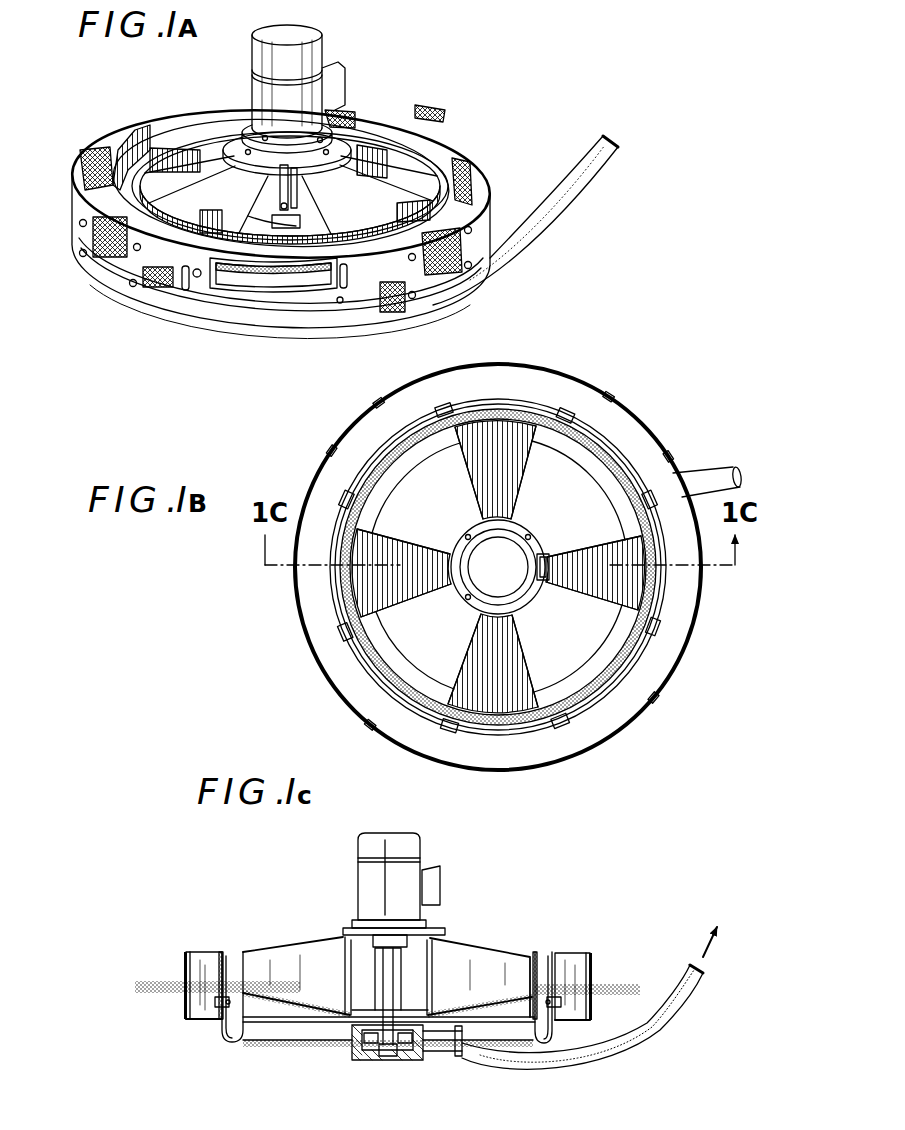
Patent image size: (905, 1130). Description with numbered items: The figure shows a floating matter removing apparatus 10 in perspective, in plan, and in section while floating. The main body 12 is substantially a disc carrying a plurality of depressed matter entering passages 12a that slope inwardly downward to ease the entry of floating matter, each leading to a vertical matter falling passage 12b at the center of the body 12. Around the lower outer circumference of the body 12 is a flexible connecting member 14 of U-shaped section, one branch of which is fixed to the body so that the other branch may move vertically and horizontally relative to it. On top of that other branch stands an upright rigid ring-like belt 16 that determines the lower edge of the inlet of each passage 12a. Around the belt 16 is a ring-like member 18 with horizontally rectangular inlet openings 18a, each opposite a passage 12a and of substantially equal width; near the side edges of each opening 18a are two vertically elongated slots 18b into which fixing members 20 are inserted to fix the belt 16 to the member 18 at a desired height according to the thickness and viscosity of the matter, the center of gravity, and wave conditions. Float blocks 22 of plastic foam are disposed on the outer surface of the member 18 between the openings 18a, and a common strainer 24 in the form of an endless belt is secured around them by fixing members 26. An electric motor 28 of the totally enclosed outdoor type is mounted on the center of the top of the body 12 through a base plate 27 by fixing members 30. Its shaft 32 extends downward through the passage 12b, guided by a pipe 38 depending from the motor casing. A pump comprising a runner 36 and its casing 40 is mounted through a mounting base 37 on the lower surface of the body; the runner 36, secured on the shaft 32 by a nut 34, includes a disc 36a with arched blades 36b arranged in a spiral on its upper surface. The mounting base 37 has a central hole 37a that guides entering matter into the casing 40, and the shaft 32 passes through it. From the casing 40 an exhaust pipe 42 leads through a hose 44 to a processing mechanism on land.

In FIG. 1A, the floating matter removing apparatus 10 is at (420, 116).
In FIG. 1B, the floating matter removing apparatus 10 is at (651, 424).
In FIG. 1C, the floating matter removing apparatus 10 is at (530, 943).
In FIG. 1A, the main body 12 is at (202, 126).
In FIG. 1B, the main body 12 is at (420, 533).
In FIG. 1C, the main body 12 is at (285, 955).
In FIG. 1B, the matter entering passage 12a is at (518, 432).
In FIG. 1C, the matter falling passage 12b is at (348, 960).
In FIG. 1B, the connecting member 14 is at (660, 582).
In FIG. 1C, the connecting member 14 is at (226, 1032).
In FIG. 1A, the ring-like belt 16 is at (143, 128).
In FIG. 1B, the ring-like belt 16 is at (468, 735).
In FIG. 1C, the ring-like belt 16 is at (220, 1014).
In FIG. 1A, the ring-like member 18 is at (478, 140).
In FIG. 1B, the ring-like member 18 is at (505, 740).
In FIG. 1C, the ring-like member 18 is at (224, 965).
In FIG. 1A, the inlet opening 18a is at (105, 150).
In FIG. 1C, the inlet opening 18a is at (212, 976).
In FIG. 1A, the vertically elongated slot 18b is at (205, 322).
In FIG. 1A, the fixing member 20 is at (186, 318).
In FIG. 1B, the fixing member 20 is at (340, 496).
In FIG. 1C, the fixing member 20 is at (220, 1003).
In FIG. 1A, the float block 22 is at (176, 118).
In FIG. 1B, the float block 22 is at (332, 452).
In FIG. 1C, the float block 22 is at (205, 952).
In FIG. 1A, the strainer 24 is at (486, 222).
In FIG. 1B, the strainer 24 is at (566, 370).
In FIG. 1C, the strainer 24 is at (187, 966).
In FIG. 1A, the fixing member 26 is at (428, 308).
In FIG. 1B, the fixing member 26 is at (366, 394).
In FIG. 1A, the base plate 27 is at (382, 116).
In FIG. 1B, the base plate 27 is at (508, 500).
In FIG. 1C, the base plate 27 is at (432, 945).
In FIG. 1A, the electric motor 28 is at (323, 32).
In FIG. 1B, the electric motor 28 is at (518, 600).
In FIG. 1C, the electric motor 28 is at (370, 862).
In FIG. 1A, the fixing member 30 is at (232, 110).
In FIG. 1B, the fixing member 30 is at (462, 536).
In FIG. 1C, the fixing member 30 is at (348, 935).
In FIG. 1A, the shaft 32 is at (246, 216).
In FIG. 1C, the shaft 32 is at (400, 992).
In FIG. 1C, the nut 34 is at (392, 1050).
In FIG. 1C, the runner 36 is at (412, 1040).
In FIG. 1C, the disc 36a is at (382, 1052).
In FIG. 1C, the arched blade 36b is at (370, 1042).
In FIG. 1C, the mounting base 37 is at (347, 1027).
In FIG. 1A, the hole 37a is at (302, 210).
In FIG. 1C, the hole 37a is at (372, 1005).
In FIG. 1A, the pipe 38 is at (272, 192).
In FIG. 1C, the pipe 38 is at (398, 962).
In FIG. 1C, the casing 40 is at (447, 1052).
In FIG. 1C, the pipe flange 42 is at (458, 1046).
In FIG. 1A, the hose 44 is at (592, 214).
In FIG. 1B, the hose 44 is at (740, 490).
In FIG. 1C, the hose 44 is at (627, 1062).